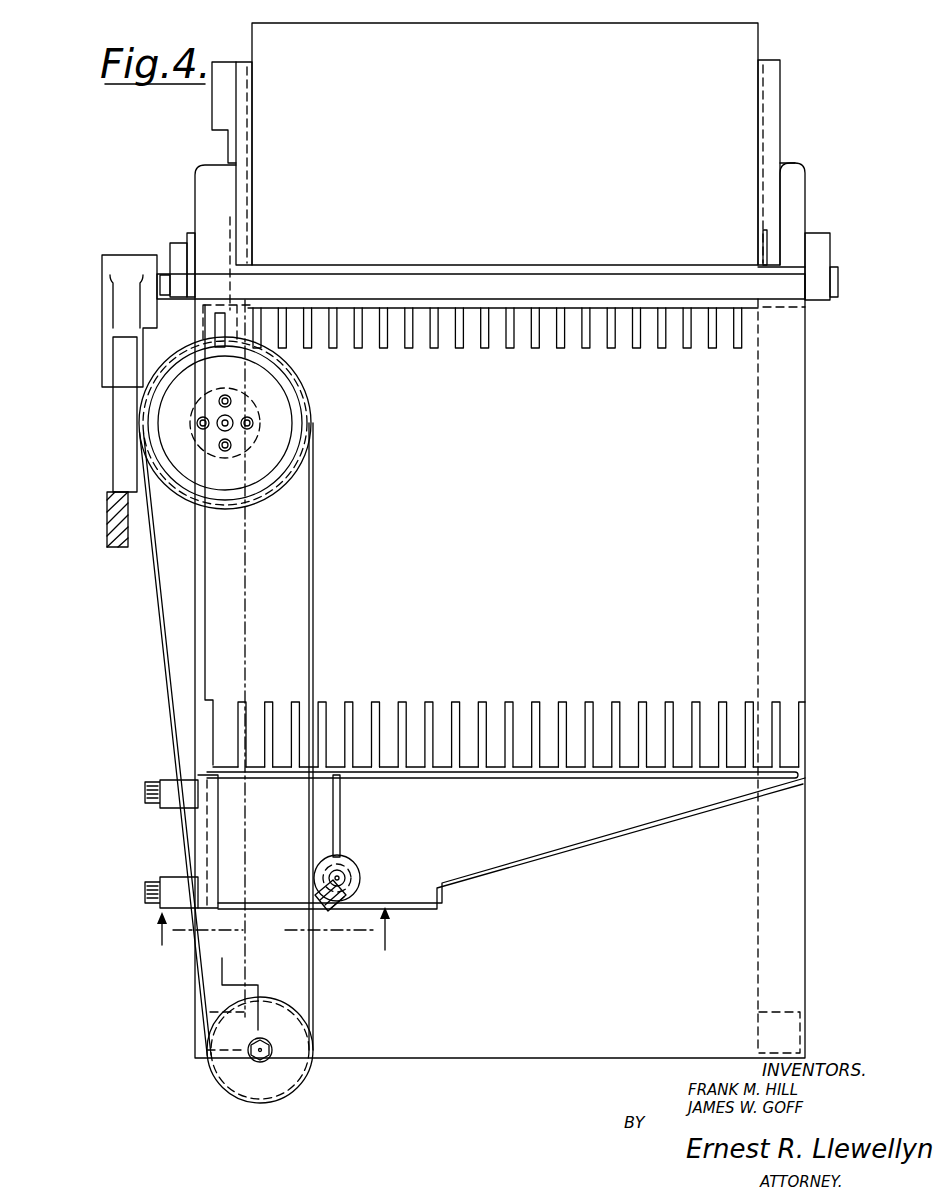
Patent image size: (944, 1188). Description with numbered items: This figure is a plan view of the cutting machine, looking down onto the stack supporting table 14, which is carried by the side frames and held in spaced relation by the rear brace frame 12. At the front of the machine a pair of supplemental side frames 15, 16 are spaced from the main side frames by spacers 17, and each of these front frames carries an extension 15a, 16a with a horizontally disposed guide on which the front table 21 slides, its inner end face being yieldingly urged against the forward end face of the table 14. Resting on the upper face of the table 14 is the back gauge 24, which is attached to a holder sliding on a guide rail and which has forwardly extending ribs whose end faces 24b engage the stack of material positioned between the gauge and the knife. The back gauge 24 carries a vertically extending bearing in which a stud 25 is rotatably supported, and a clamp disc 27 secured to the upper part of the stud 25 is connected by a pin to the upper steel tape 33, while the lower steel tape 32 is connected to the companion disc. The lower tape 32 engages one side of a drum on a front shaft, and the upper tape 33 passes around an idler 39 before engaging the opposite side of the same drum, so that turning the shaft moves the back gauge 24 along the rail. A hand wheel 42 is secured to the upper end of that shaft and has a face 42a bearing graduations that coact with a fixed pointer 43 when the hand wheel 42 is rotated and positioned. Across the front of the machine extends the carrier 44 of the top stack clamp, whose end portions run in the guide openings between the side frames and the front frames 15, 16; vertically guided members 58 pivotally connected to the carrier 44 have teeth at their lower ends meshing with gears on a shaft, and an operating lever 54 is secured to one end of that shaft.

The table 14 is at (535, 1045).
The front table 21 is at (720, 37).
The supplemental side frame 15 is at (238, 232).
The extension 15a is at (242, 82).
The supplemental side frame 16 is at (767, 237).
The extension 16a is at (770, 97).
The spacer 17 is at (582, 285).
The vertically guided member 58 is at (175, 255).
The operating lever 54 is at (120, 548).
The fixed pointer 43 is at (216, 322).
The carrier 44 is at (497, 303).
The hand wheel 42 is at (303, 386).
The face 42a is at (303, 418).
The lower steel tape 32 is at (314, 585).
The upper steel tape 33 is at (160, 650).
The end face 24b is at (427, 702).
The back gauge 24 is at (547, 858).
The clamp disc 27 is at (358, 867).
The stud 25 is at (346, 880).
The rear brace frame 12 is at (273, 928).
The idler 39 is at (300, 1088).